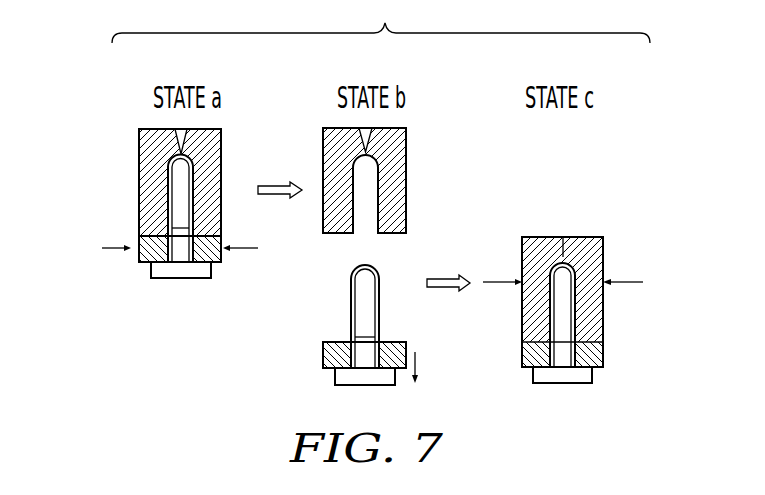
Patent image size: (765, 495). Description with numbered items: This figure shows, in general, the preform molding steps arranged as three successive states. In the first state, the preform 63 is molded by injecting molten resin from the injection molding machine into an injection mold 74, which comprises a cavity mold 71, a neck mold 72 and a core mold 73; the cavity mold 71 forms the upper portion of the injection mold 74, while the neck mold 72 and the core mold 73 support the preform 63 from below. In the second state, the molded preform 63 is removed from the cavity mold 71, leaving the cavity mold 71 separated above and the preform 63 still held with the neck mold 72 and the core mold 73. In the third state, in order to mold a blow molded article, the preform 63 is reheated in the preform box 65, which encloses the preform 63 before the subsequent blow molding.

The preform 63 is at (168, 222).
The preform box 65 is at (610, 334).
The cavity mold 71 is at (222, 173).
The neck mold 72 is at (145, 262).
The core mold 73 is at (206, 278).
The injection mold 74 is at (245, 248).